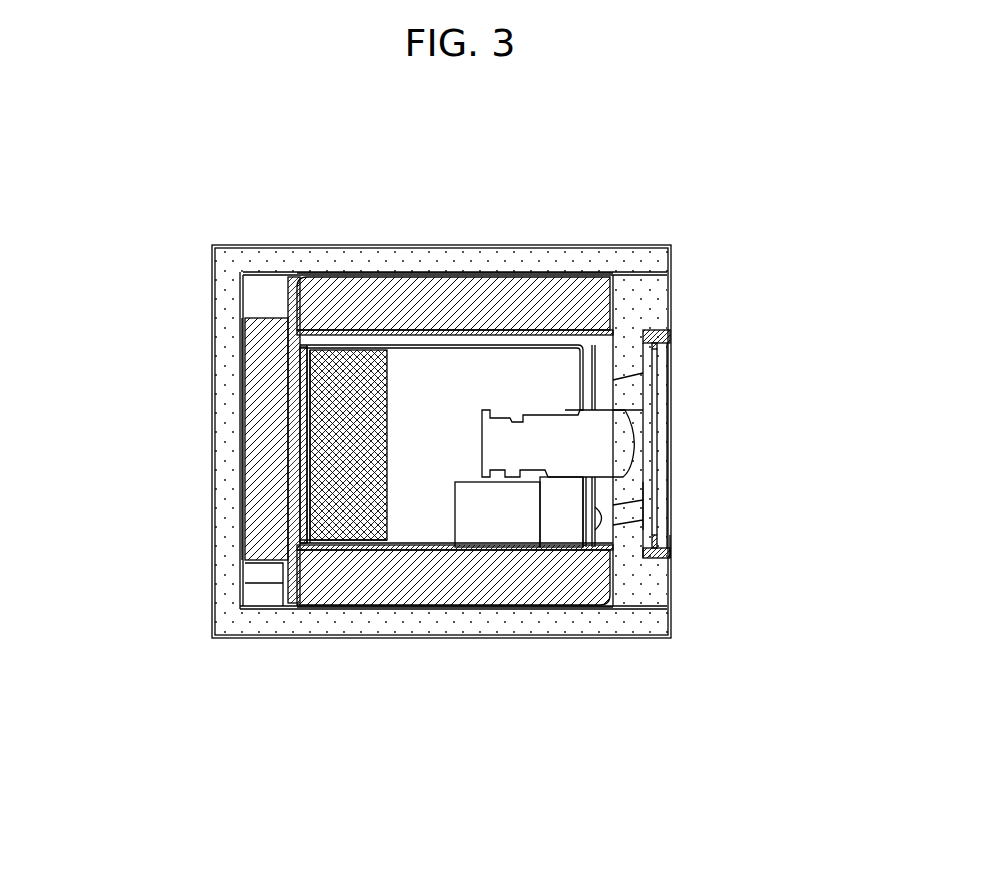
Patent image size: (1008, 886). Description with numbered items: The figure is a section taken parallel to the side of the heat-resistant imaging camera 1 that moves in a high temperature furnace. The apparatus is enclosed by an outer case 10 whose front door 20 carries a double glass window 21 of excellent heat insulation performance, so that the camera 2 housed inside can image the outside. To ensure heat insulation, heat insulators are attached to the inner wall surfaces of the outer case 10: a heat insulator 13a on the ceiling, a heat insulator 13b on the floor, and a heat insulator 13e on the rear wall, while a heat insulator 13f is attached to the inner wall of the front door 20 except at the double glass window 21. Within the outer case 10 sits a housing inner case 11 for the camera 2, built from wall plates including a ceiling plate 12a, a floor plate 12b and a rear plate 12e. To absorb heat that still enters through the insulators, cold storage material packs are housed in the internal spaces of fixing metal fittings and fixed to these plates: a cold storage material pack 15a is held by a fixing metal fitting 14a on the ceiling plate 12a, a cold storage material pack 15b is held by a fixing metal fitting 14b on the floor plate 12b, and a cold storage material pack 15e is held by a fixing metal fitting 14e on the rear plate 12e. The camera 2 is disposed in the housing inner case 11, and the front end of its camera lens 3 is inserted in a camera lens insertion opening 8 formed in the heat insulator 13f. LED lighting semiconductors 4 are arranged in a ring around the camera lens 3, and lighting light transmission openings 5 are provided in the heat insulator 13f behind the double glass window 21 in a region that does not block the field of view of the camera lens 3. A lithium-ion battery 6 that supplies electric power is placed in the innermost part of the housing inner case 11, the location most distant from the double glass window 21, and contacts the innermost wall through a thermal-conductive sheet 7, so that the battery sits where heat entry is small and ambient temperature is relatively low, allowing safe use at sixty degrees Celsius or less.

The heat-resistant imaging camera 1 is at (285, 240).
The camera 2 is at (430, 475).
The camera lens 3 is at (613, 448).
The LED lighting semiconductors 4 is at (607, 367).
The lighting light transmission openings 5 is at (633, 373).
The lithium-ion battery 6 is at (335, 522).
The thermal-conductive sheet 7 is at (302, 507).
The camera lens insertion opening 8 is at (635, 482).
The outer case 10 is at (618, 242).
The housing inner case 11 is at (618, 330).
The ceiling plate 12a is at (513, 328).
The floor plate 12b is at (563, 548).
The rear plate 12e is at (292, 378).
The heat insulator 13a is at (508, 258).
The heat insulator 13b is at (540, 620).
The heat insulator 13e is at (225, 398).
The heat insulator 13f is at (643, 585).
The fixing metal fitting 14a is at (437, 275).
The fixing metal fitting 14b is at (480, 608).
The fixing metal fitting 14e is at (240, 447).
The cold storage material pack 15a is at (347, 292).
The cold storage material pack 15b is at (410, 573).
The cold storage material pack 15e is at (262, 488).
The front door 20 is at (672, 572).
The double glass window 21 is at (668, 417).